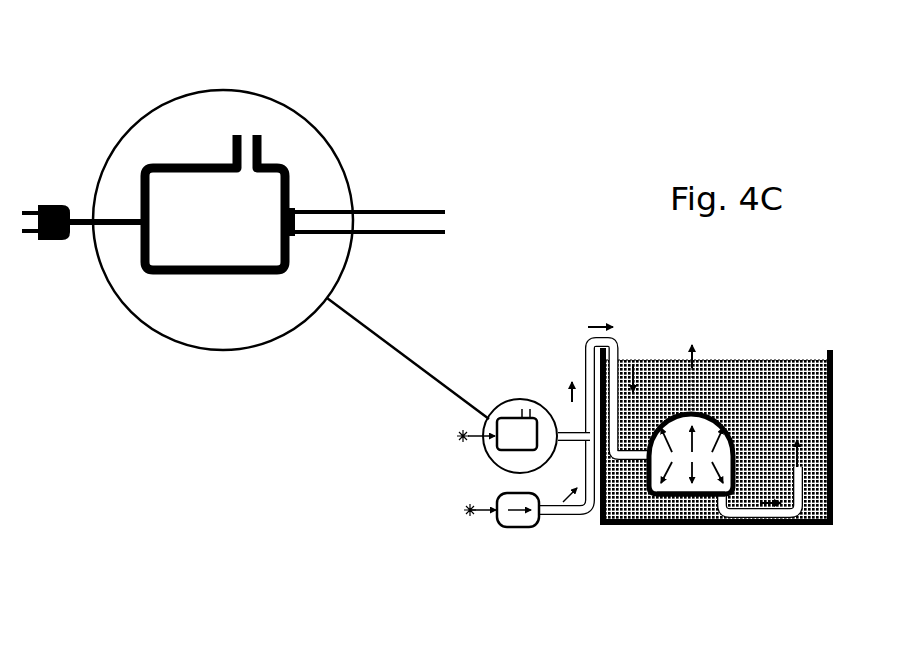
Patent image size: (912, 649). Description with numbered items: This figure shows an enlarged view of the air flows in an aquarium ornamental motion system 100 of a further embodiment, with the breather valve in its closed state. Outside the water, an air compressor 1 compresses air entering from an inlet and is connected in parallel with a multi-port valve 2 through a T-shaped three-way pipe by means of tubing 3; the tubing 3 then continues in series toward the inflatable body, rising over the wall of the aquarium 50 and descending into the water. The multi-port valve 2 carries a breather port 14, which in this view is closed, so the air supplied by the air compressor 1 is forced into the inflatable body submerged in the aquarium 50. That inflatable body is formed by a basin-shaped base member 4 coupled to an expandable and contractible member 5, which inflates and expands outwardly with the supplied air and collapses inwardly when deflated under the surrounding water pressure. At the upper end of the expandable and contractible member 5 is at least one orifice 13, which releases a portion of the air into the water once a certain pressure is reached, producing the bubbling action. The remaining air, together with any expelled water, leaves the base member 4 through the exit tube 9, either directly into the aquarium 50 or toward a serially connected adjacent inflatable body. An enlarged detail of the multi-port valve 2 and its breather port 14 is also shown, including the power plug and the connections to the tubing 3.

The air compressor 1 is at (517, 528).
The multi-port valve 2 is at (142, 268).
The tubing 3 is at (584, 357).
The base member 4 is at (655, 500).
The expandable and contractible member 5 is at (667, 400).
The exit tube 9 is at (782, 520).
The orifice 13 is at (696, 410).
The breather port 14 is at (243, 115).
The aquarium 50 is at (828, 351).
The aquarium ornamental motion system 100 is at (608, 287).